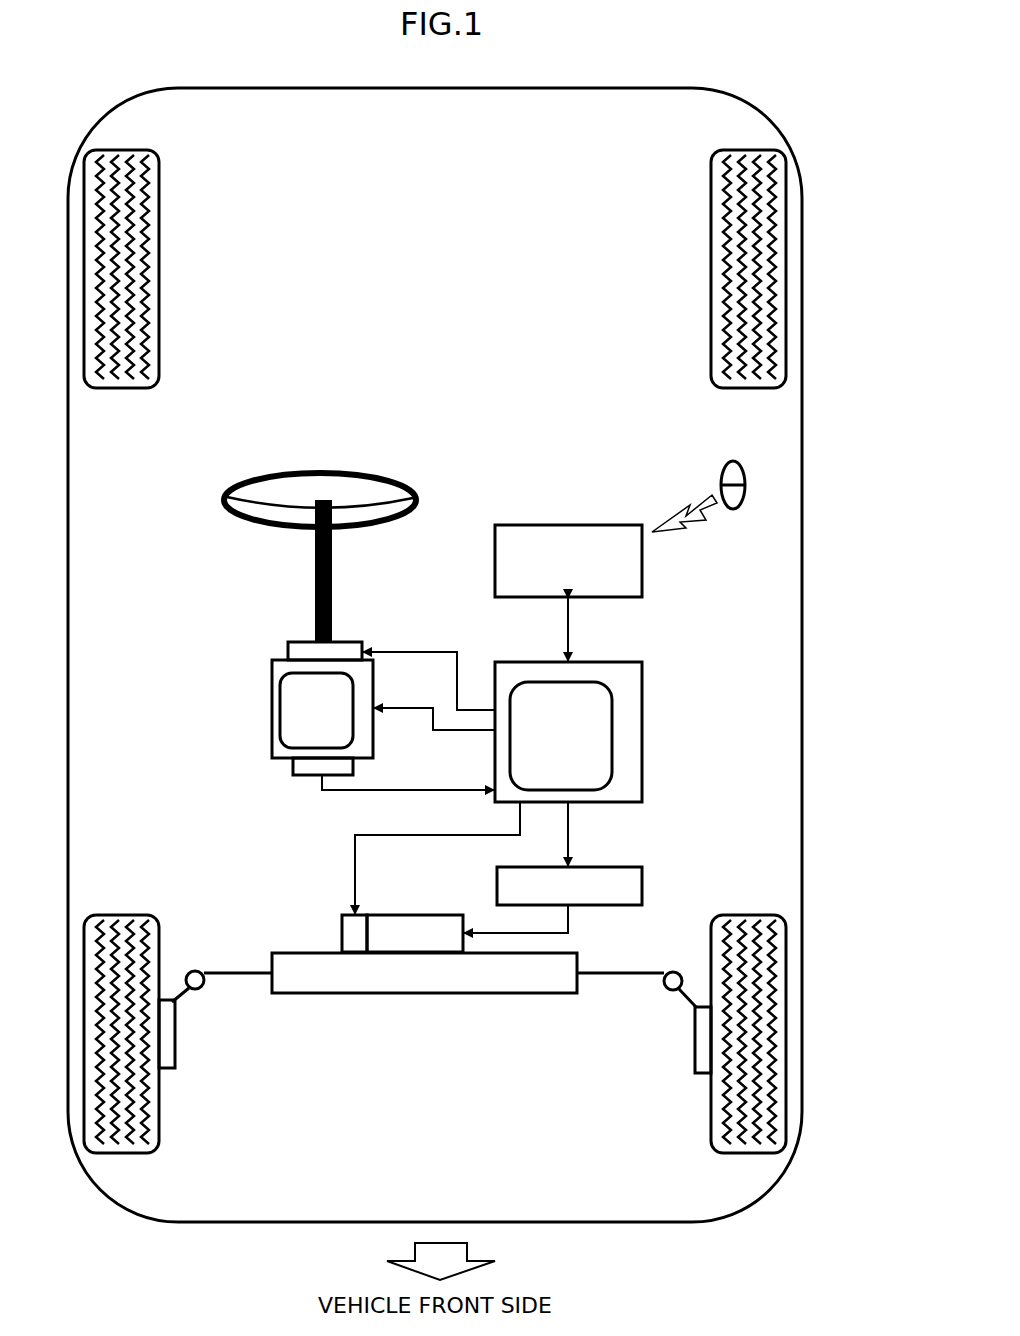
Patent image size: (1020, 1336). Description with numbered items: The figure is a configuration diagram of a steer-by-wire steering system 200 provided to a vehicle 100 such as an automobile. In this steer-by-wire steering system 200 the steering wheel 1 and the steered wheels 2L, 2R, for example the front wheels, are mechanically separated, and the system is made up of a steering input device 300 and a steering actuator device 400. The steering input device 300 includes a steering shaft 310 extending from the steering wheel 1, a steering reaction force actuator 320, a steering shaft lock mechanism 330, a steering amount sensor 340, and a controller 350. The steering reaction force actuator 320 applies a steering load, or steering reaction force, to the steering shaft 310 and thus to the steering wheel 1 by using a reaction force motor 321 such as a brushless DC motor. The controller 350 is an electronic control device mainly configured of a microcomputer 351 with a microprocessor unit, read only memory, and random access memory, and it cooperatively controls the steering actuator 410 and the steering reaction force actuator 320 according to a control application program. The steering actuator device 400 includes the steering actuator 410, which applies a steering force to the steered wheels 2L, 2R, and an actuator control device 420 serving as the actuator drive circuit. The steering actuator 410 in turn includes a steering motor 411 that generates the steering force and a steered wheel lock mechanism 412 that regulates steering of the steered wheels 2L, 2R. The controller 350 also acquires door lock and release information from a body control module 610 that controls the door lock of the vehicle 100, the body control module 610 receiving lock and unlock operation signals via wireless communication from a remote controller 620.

The steering wheel 1 is at (280, 478).
The steered wheel 2R is at (160, 1122).
The steered wheel 2L is at (710, 1118).
The vehicle 100 is at (803, 330).
The steer-by-wire steering system 200 is at (420, 668).
The steering input device 300 is at (259, 662).
The steering shaft 310 is at (333, 592).
The steering reaction force actuator 320 is at (272, 690).
The reaction force motor 321 is at (280, 728).
The steering shaft lock mechanism 330 is at (288, 645).
The steering amount sensor 340 is at (293, 775).
The controller 350 is at (642, 685).
The microcomputer 351 is at (612, 740).
The steering actuator device 400 is at (428, 961).
The steering actuator 410 is at (362, 900).
The steering motor 411 is at (402, 914).
The steered wheel lock mechanism 412 is at (342, 935).
The actuator control device 420 is at (642, 888).
The body control module 610 is at (556, 525).
The remote controller 620 is at (722, 470).